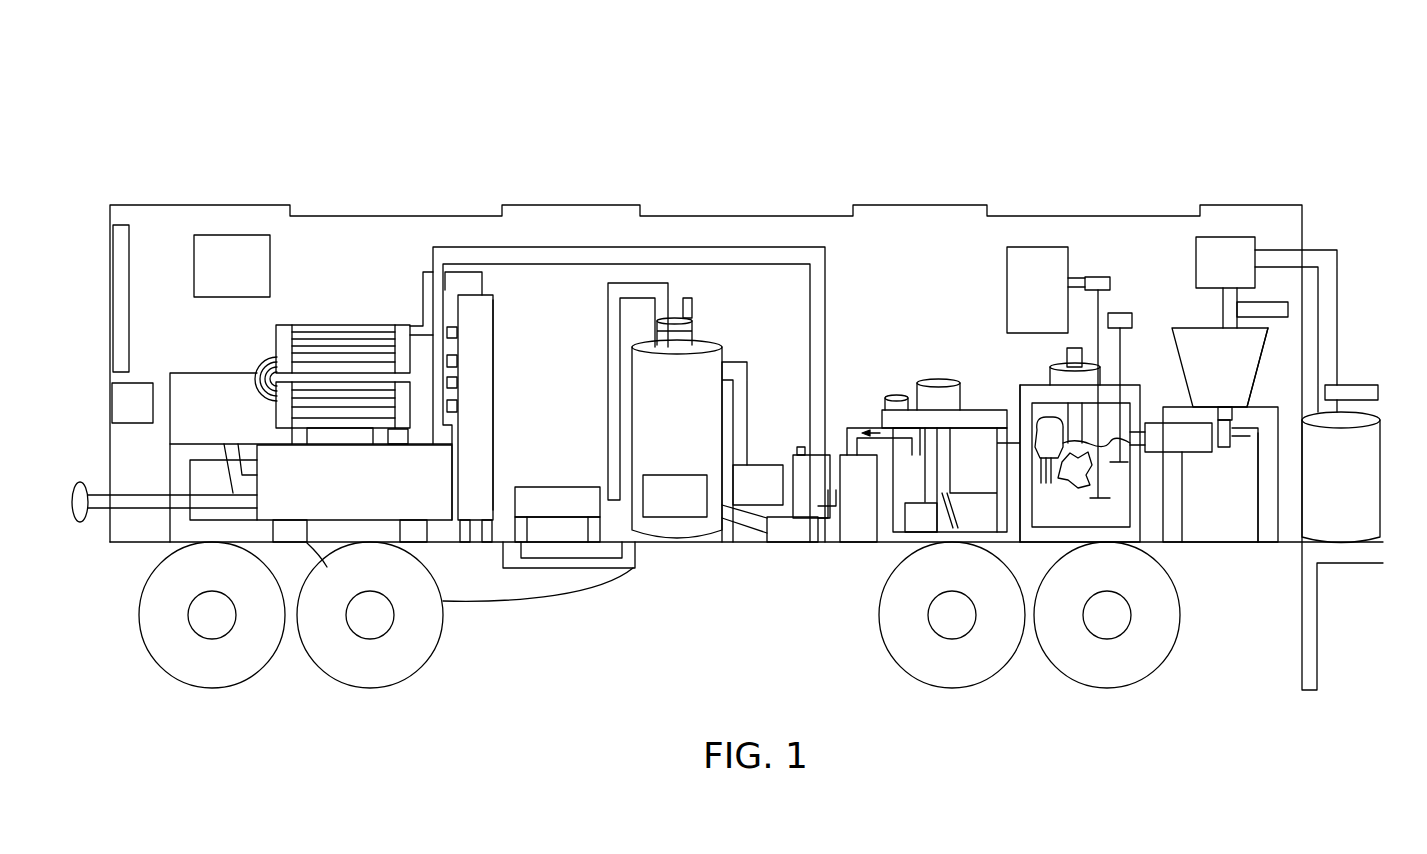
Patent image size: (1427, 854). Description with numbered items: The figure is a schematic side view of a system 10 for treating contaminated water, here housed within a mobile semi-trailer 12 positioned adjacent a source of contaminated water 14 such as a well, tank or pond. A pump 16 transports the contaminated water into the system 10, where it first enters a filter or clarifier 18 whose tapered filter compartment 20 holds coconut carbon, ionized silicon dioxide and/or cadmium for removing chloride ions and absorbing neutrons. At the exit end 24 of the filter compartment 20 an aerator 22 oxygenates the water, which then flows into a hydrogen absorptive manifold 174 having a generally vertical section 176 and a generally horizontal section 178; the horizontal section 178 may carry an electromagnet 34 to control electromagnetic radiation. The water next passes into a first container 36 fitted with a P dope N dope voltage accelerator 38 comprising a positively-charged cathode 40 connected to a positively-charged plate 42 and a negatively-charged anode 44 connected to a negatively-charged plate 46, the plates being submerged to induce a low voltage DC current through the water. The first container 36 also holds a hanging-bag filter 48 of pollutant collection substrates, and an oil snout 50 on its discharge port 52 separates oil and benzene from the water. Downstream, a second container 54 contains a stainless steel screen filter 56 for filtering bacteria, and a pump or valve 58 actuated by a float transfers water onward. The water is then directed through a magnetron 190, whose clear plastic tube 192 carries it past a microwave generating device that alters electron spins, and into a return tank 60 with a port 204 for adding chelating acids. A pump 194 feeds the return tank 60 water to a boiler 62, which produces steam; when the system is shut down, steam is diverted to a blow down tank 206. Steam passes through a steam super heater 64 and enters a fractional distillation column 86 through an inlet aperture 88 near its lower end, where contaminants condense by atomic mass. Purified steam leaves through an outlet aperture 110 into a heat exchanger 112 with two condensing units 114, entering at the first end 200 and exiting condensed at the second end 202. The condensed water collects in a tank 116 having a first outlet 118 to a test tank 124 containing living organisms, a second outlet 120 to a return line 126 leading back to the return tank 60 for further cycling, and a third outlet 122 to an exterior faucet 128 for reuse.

The system 10 is at (1037, 110).
The mobile semi-trailer 12 is at (170, 200).
The source of contaminated water 14 is at (1370, 495).
The pump 16 is at (1225, 237).
The filter or clarifier 18 is at (1245, 345).
The tapered canister or filter compartment 20 is at (1250, 385).
The aerator 22 is at (1195, 448).
The exit end 24 is at (1222, 407).
The electromagnet 34 is at (1180, 412).
The first container 36 is at (1048, 542).
The P dope N dope voltage accelerator or regulator 38 is at (1125, 300).
The positively-charged cathode 40 is at (1122, 313).
The positively-charged plate 42 is at (1120, 462).
The negatively-charged anode 44 is at (1098, 277).
The negatively-charged plate 46 is at (1098, 498).
The filter 48 is at (1070, 488).
The oil snout 50 is at (1050, 400).
The discharge orifice or port 52 is at (1035, 425).
The second container 54 is at (912, 535).
The stainless steel screen filter 56 is at (952, 510).
The pump and/or valve 58 is at (905, 395).
The return tank 60 is at (825, 455).
The boiler 62 is at (705, 365).
The steam super heater 64 is at (560, 485).
The fractional distillation column 86 is at (498, 340).
The inlet aperture 88 is at (494, 500).
The outlet aperture 110 is at (478, 290).
The condenser or heat exchanger 112 is at (315, 335).
The condensing units 114 is at (276, 343).
The tank 116 is at (338, 522).
The first outlet 118 is at (257, 478).
The second outlet 120 is at (440, 500).
The third outlet 122 is at (257, 500).
The test tank 124 is at (170, 373).
The return line 126 is at (540, 247).
The exterior faucet 128 is at (96, 500).
The hydrogen absorptive manifold 174 is at (1268, 463).
The generally vertical section 176 is at (1243, 440).
The generally horizontal section 178 is at (1228, 448).
The magnetron 190 is at (862, 428).
The clear plastic pipe or tube 192 is at (822, 540).
The pump 194 is at (780, 542).
The first end 200 is at (342, 322).
The second end 202 is at (400, 445).
The port 204 is at (800, 447).
The blow down tank 206 is at (762, 465).